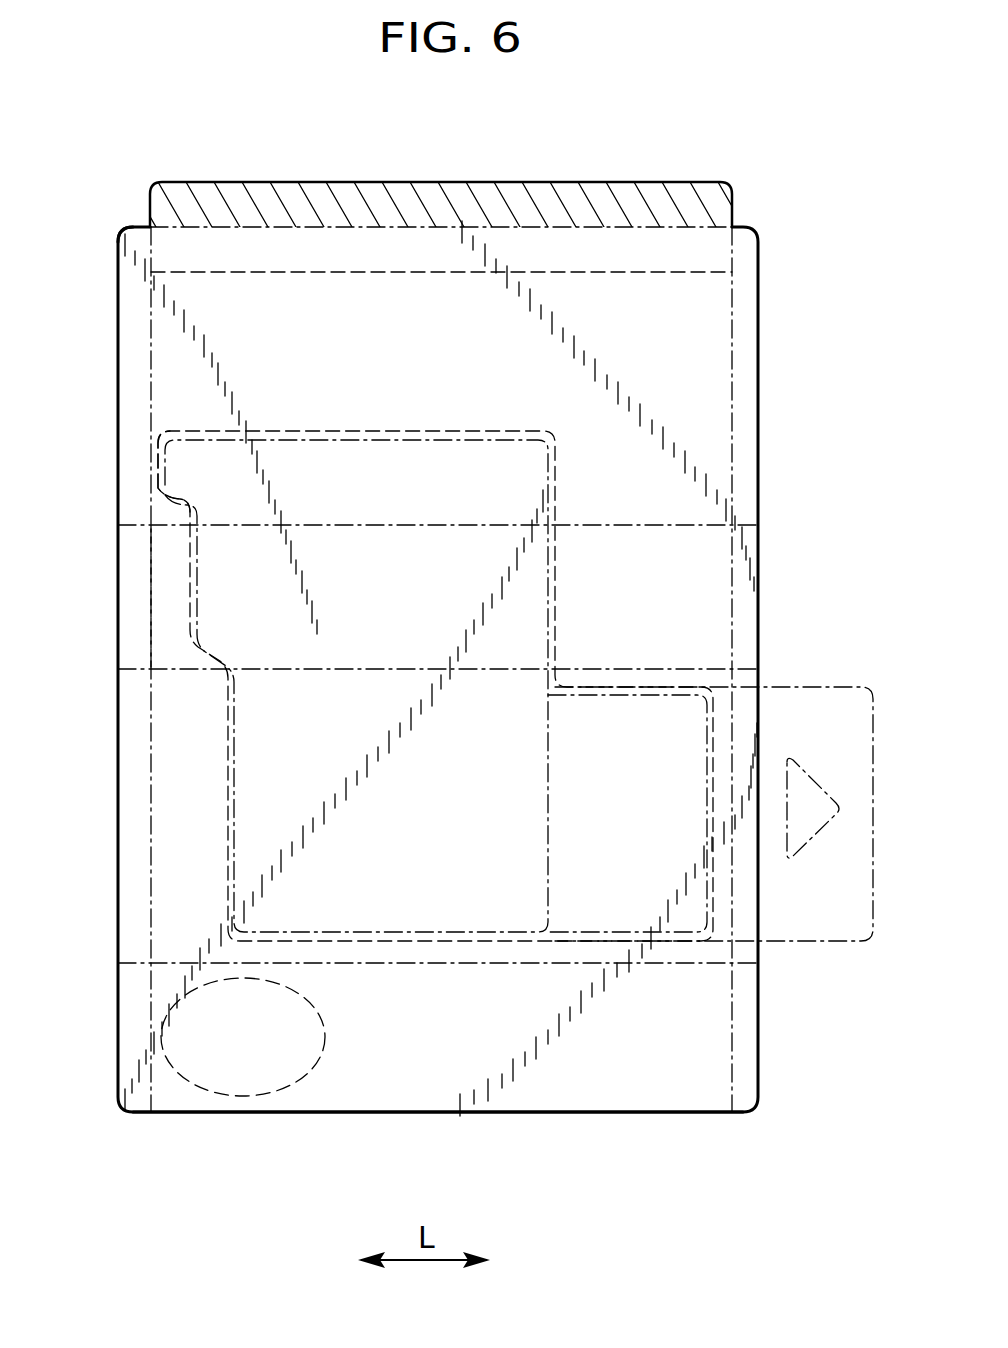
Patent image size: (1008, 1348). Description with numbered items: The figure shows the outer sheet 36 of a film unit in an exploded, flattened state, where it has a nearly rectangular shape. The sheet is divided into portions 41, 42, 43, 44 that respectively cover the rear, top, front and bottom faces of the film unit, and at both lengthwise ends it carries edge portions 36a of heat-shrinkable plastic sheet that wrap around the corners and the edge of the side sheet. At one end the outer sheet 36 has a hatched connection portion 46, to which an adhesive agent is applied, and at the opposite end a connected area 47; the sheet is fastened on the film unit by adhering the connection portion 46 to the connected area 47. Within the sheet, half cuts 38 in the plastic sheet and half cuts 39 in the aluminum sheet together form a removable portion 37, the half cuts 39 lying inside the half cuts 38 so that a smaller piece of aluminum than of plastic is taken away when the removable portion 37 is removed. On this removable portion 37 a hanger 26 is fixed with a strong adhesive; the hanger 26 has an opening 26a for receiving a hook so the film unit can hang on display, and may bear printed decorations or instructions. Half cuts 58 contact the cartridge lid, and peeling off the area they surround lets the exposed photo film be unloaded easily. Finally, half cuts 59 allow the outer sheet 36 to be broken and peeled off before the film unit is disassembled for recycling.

The outer sheet 36 is at (772, 194).
The edge portion 36a is at (745, 366).
The connection portion 46 is at (452, 200).
The connected area 47 is at (441, 1100).
The half cuts 59 is at (178, 272).
The rear face covering portion 41 is at (180, 360).
The top face covering portion 42 is at (167, 595).
The front face covering portion 43 is at (177, 817).
The bottom face covering portion 44 is at (172, 983).
The removable portion 37 is at (200, 473).
The half cuts 38 is at (556, 595).
The half cuts 39 is at (549, 500).
The hanger 26 is at (785, 702).
The opening 26a is at (808, 832).
The half cuts 58 is at (238, 1097).